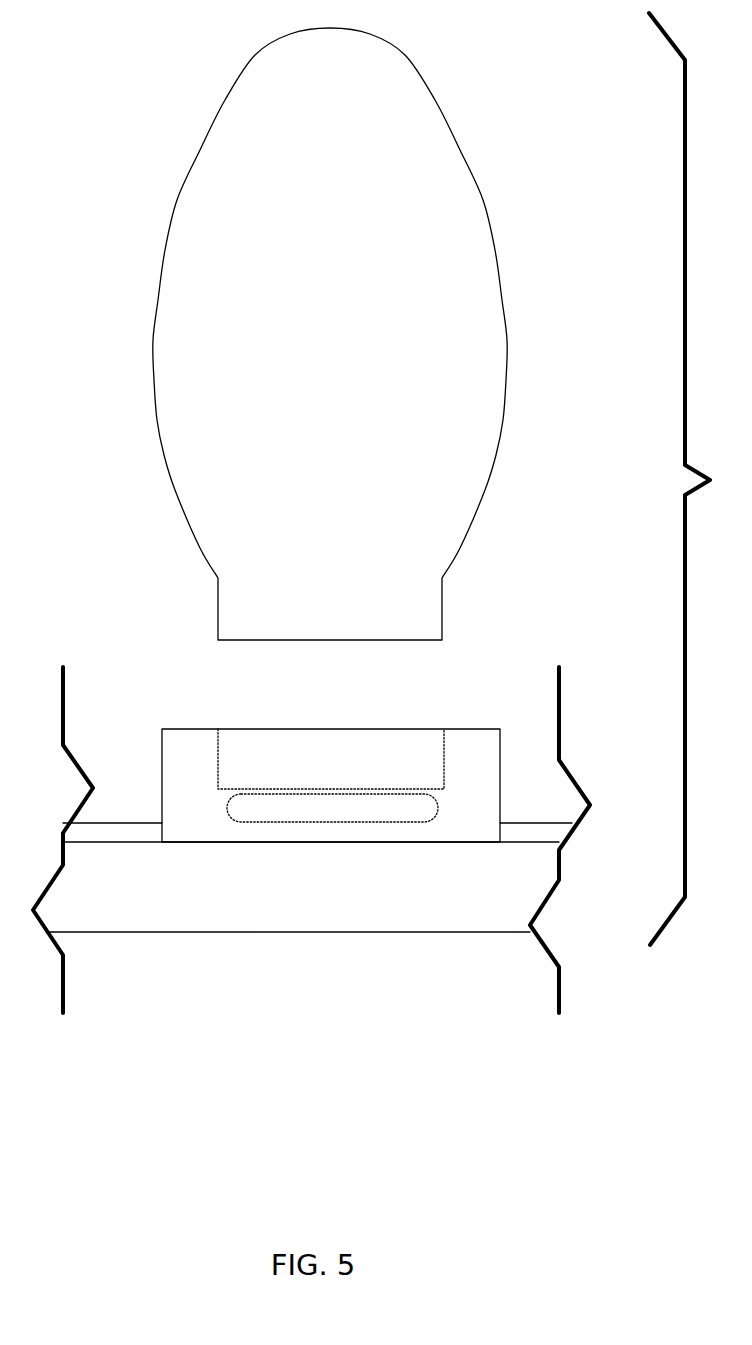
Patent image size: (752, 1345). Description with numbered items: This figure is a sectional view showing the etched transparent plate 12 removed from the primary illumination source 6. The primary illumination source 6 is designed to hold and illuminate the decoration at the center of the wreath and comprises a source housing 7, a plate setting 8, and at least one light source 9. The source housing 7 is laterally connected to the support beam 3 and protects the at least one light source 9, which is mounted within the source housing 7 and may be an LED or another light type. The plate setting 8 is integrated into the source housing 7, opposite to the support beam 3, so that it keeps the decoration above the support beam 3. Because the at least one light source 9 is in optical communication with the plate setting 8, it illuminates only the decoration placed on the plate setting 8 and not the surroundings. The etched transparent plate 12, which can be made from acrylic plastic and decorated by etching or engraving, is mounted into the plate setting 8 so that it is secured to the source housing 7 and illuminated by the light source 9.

The support beam 3 is at (258, 925).
The primary illumination source 6 is at (125, 745).
The source housing 7 is at (192, 735).
The plate setting 8 is at (228, 767).
The light source 9 is at (432, 805).
The etched transparent plate 12 is at (186, 206).